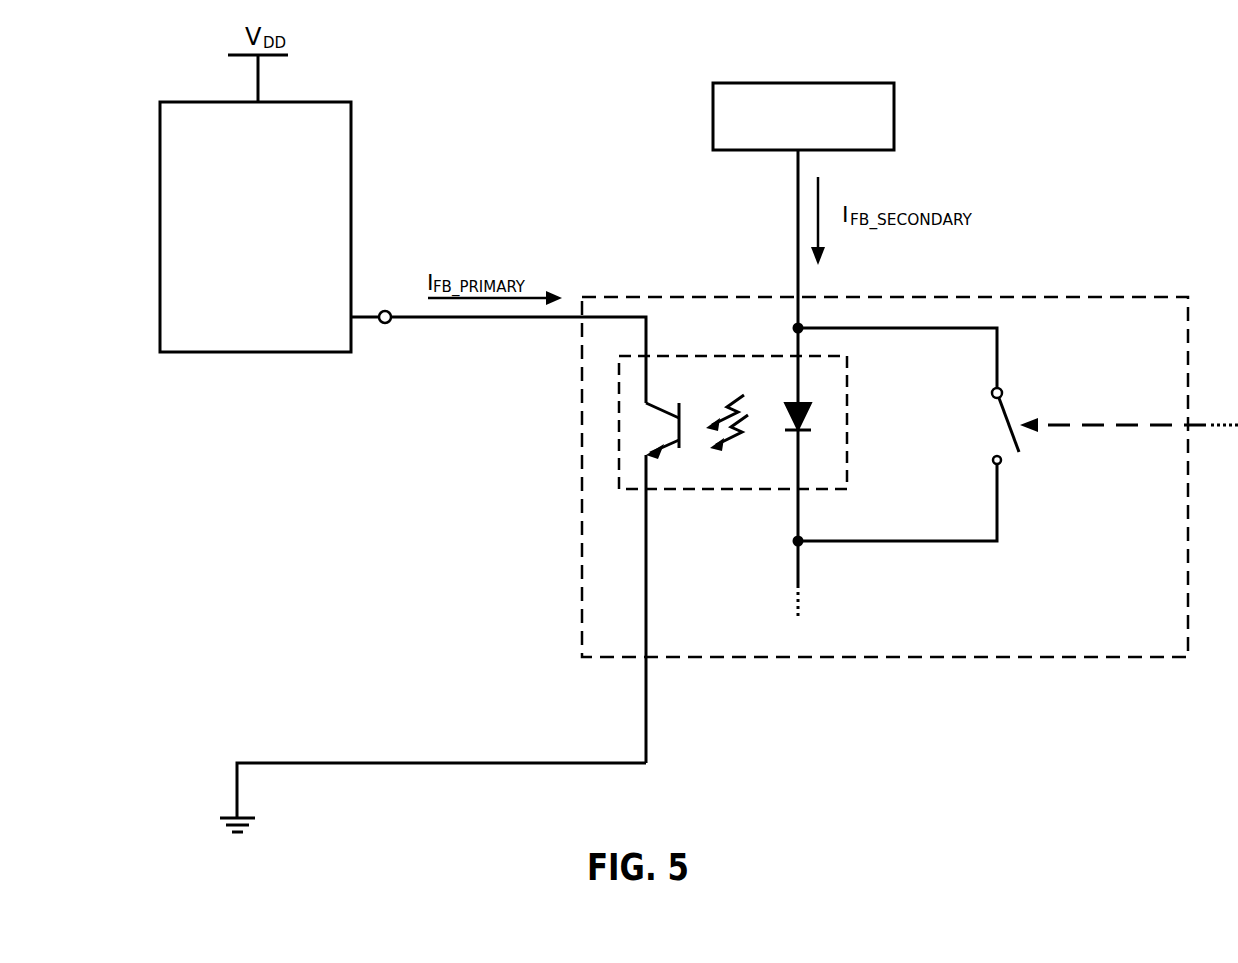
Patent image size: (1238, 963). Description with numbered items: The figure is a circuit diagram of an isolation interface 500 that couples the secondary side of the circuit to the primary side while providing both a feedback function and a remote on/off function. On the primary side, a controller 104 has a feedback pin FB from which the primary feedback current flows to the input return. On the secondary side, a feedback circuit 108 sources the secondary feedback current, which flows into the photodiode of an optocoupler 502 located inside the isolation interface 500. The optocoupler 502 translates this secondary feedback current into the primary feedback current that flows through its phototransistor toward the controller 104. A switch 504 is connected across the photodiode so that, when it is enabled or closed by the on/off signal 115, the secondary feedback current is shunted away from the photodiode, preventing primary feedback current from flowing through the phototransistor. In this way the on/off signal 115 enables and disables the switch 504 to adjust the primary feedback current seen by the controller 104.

The controller 104 is at (243, 244).
The feedback circuit 108 is at (853, 142).
The isolation interface 500 is at (1036, 289).
The optocoupler 502 is at (723, 495).
The switch 504 is at (993, 423).
The on/off signal 115 is at (1095, 437).